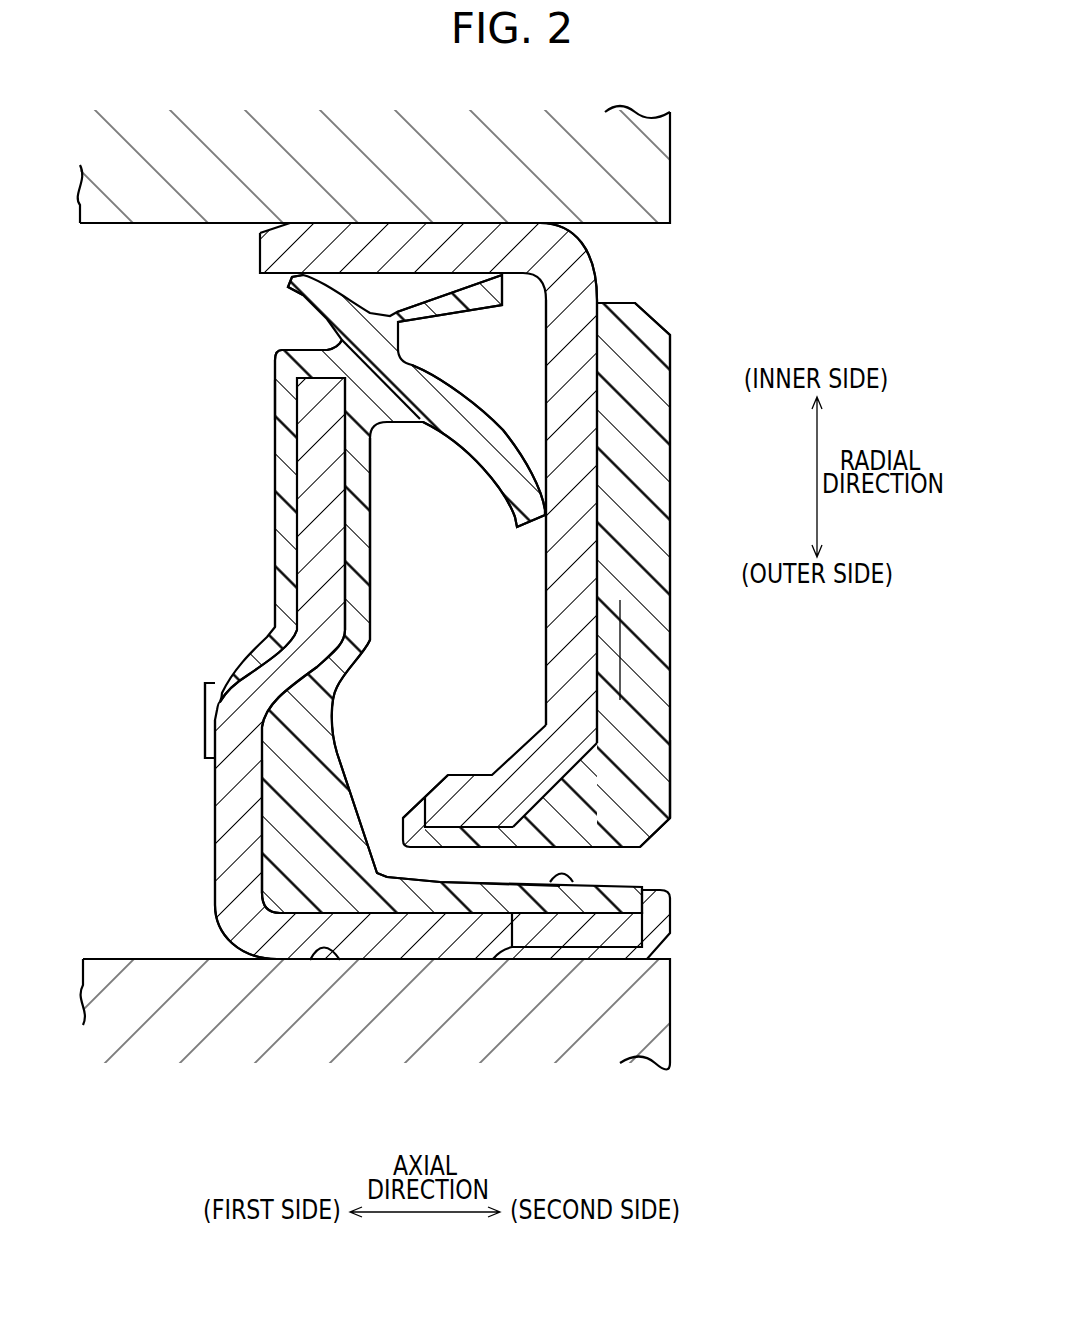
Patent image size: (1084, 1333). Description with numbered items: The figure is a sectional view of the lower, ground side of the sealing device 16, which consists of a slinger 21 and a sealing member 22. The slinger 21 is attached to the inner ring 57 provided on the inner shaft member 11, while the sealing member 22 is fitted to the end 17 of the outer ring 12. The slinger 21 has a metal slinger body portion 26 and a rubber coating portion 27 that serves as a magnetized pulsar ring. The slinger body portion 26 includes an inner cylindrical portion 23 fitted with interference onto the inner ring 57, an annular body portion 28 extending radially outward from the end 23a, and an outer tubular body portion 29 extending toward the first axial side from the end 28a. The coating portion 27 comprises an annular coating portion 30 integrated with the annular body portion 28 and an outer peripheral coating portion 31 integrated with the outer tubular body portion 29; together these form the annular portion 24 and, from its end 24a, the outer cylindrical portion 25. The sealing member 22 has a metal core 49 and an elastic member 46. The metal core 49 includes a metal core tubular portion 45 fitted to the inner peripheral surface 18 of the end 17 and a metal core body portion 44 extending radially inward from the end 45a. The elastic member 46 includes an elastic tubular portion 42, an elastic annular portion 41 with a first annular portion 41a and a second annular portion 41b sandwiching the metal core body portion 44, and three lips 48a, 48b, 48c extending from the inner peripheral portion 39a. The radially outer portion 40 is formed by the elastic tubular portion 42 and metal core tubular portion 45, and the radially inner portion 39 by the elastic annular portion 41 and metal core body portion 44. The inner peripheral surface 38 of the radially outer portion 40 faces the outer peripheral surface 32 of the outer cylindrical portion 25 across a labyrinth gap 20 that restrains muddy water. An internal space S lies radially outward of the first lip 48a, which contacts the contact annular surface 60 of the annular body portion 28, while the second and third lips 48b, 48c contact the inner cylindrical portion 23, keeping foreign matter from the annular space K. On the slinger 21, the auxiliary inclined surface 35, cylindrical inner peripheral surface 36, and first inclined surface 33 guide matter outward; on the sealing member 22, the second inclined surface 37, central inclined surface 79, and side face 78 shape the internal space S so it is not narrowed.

The inner shaft member 11 is at (672, 173).
The outer ring 12 is at (672, 995).
The sealing device 16 is at (272, 388).
The end of the outer ring 17 is at (358, 1013).
The inner peripheral surface 18 is at (310, 960).
The gap 20 is at (611, 596).
The slinger 21 is at (673, 352).
The sealing member 22 is at (213, 818).
The inner cylindrical portion 23 is at (395, 247).
The end of the inner cylindrical portion 23a is at (563, 263).
The annular portion 24 is at (735, 600).
The end of the annular portion 24a is at (630, 762).
The outer cylindrical portion 25 is at (670, 863).
The slinger body portion 26 is at (598, 437).
The coating portion 27 is at (673, 563).
The annular body portion 28 is at (600, 612).
The end of the annular body portion 28a is at (572, 733).
The outer tubular body portion 29 is at (508, 795).
The annular coating portion 30 is at (627, 658).
The outer peripheral coating portion 31 is at (545, 840).
The outer peripheral surface 32 is at (490, 853).
The first inclined surface 33 is at (425, 797).
The auxiliary inclined surface 35 is at (521, 747).
The cylindrical inner peripheral surface 36 is at (469, 775).
The second inclined surface 37 is at (353, 803).
The inner peripheral surface 38 is at (558, 883).
The radially inner portion 39 is at (150, 600).
The inner peripheral portion 39a is at (358, 340).
The radially outer portion 40 is at (462, 1026).
The elastic annular portion 41 is at (262, 667).
The first annular portion 41a is at (283, 483).
The second annular portion 41b is at (357, 562).
The elastic tubular portion 42 is at (528, 903).
The metal core body portion 44 is at (317, 612).
The metal core tubular portion 45 is at (473, 937).
The end of the metal core tubular portion 45a is at (242, 939).
The elastic member 46 is at (215, 783).
The first lip 48a is at (485, 430).
The second lip 48b is at (482, 285).
The third lip 48c is at (290, 282).
The metal core 49 is at (217, 860).
The inner ring 57 is at (343, 173).
The contact annular surface 60 is at (548, 611).
The side face 78 is at (372, 533).
The central inclined surface 79 is at (350, 692).
The annular space K is at (203, 267).
The internal space S is at (462, 665).